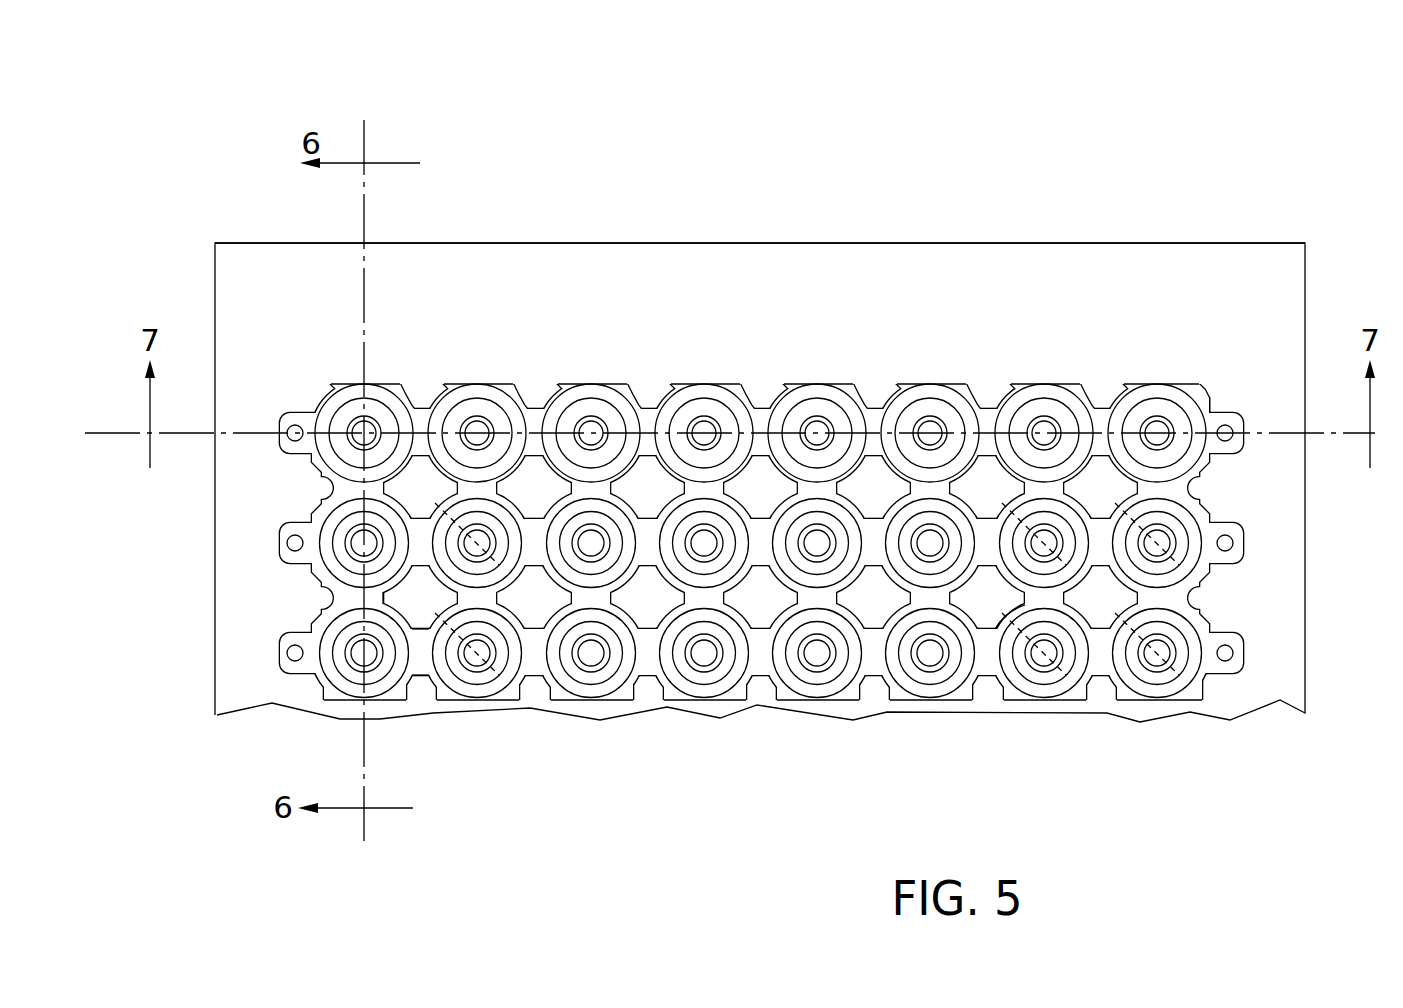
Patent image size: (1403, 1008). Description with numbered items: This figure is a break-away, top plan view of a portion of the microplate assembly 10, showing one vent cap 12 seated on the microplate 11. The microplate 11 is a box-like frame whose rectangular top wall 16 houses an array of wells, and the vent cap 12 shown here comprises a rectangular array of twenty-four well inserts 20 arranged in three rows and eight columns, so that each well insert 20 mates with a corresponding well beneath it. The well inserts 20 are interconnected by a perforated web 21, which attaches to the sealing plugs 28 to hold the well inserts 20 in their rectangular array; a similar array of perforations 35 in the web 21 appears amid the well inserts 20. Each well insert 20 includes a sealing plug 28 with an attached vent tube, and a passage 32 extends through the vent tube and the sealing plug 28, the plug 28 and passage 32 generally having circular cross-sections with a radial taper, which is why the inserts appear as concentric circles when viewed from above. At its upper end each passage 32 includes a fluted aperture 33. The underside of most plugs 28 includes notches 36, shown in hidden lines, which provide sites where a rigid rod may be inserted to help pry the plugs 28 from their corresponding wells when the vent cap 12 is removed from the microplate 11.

The microplate assembly 10 is at (828, 168).
The microplate 11 is at (1262, 243).
The vent cap 12 is at (1160, 386).
The top wall 16 is at (487, 290).
The well inserts 20 is at (706, 388).
The perforated web 21 is at (347, 600).
The sealing plug 28 is at (580, 692).
The passage 32 is at (700, 650).
The fluted aperture 33 is at (915, 673).
The perforations 35 is at (992, 613).
The notches 36 is at (1104, 688).